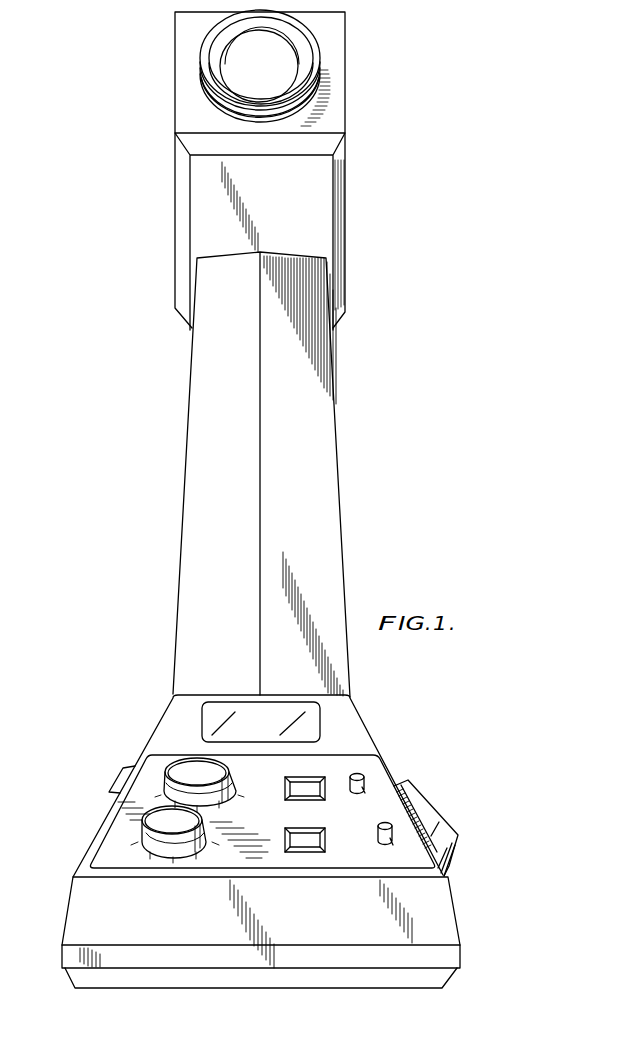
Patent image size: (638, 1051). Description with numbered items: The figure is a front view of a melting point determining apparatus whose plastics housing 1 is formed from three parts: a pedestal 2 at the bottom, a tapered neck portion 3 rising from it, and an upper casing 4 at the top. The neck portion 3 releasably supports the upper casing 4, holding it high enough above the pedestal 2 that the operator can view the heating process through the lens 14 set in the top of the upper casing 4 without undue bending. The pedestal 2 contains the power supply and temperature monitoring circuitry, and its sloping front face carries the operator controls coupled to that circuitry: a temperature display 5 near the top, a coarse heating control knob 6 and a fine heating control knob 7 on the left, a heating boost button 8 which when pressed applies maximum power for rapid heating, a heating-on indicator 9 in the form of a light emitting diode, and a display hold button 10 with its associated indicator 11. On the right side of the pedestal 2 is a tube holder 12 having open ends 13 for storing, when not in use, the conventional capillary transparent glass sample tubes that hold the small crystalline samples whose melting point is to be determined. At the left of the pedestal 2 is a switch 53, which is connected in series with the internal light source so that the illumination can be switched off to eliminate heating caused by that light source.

The plastics housing 1 is at (179, 515).
The pedestal 2 is at (109, 804).
The neck portion 3 is at (188, 428).
The upper casing 4 is at (345, 106).
The temperature display 5 is at (210, 720).
The coarse heating control knob 6 is at (193, 765).
The fine heating control knob 7 is at (153, 842).
The heating boost button 8 is at (307, 787).
The heating-on indicator 9 is at (360, 777).
The display hold button 10 is at (305, 852).
The indicator 11 is at (385, 852).
The tube holder 12 is at (457, 848).
The open ends 13 is at (432, 802).
The lens 14 is at (240, 55).
The switch 53 is at (122, 772).